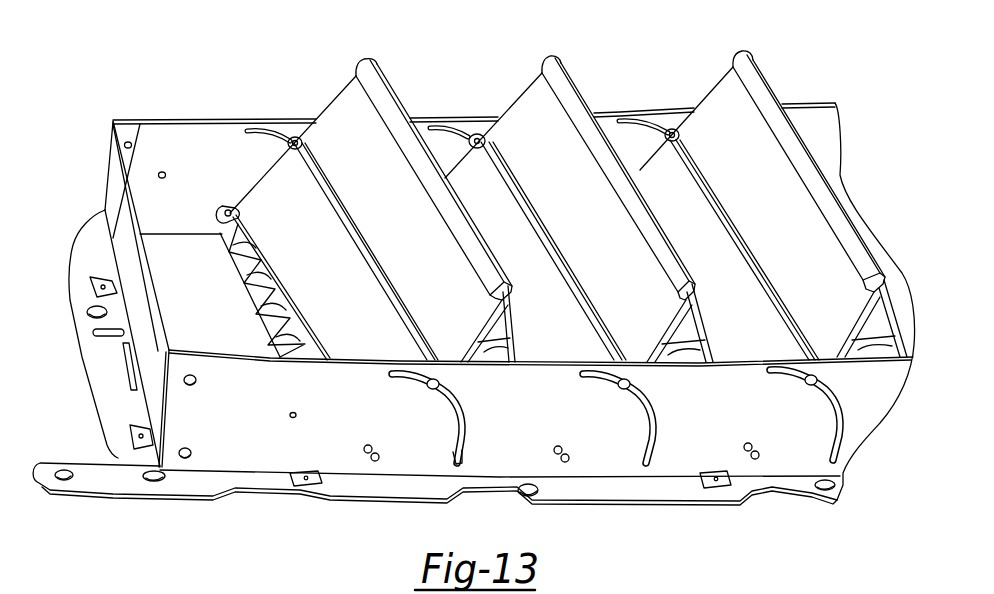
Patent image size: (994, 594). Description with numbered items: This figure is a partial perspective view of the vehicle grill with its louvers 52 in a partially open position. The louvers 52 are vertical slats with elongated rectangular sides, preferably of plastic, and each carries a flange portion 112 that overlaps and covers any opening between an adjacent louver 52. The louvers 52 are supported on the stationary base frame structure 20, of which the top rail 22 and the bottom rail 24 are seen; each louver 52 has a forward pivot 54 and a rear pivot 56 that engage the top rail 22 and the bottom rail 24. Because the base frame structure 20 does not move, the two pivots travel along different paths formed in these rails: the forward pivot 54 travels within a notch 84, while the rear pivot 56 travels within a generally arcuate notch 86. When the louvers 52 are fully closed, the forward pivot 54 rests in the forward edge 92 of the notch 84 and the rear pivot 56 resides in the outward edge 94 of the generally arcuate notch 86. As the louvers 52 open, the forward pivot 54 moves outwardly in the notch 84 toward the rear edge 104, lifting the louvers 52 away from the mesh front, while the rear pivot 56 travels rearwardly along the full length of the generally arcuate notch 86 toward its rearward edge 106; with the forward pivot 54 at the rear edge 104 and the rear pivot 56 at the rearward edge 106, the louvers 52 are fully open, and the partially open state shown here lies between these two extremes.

The base frame structure 20 is at (468, 118).
The top rail 22 is at (442, 150).
The bottom rail 24 is at (235, 452).
The louver 52 is at (740, 110).
The forward pivot 54 is at (241, 217).
The rear pivot 56 is at (303, 145).
The notch 84 is at (230, 216).
The generally arcuate notch 86 is at (250, 133).
The forward edge 92 is at (374, 462).
The outward edge 94 is at (458, 466).
The rear edge 104 is at (369, 444).
The rearward edge 106 is at (397, 380).
The flange portion 112 is at (748, 72).